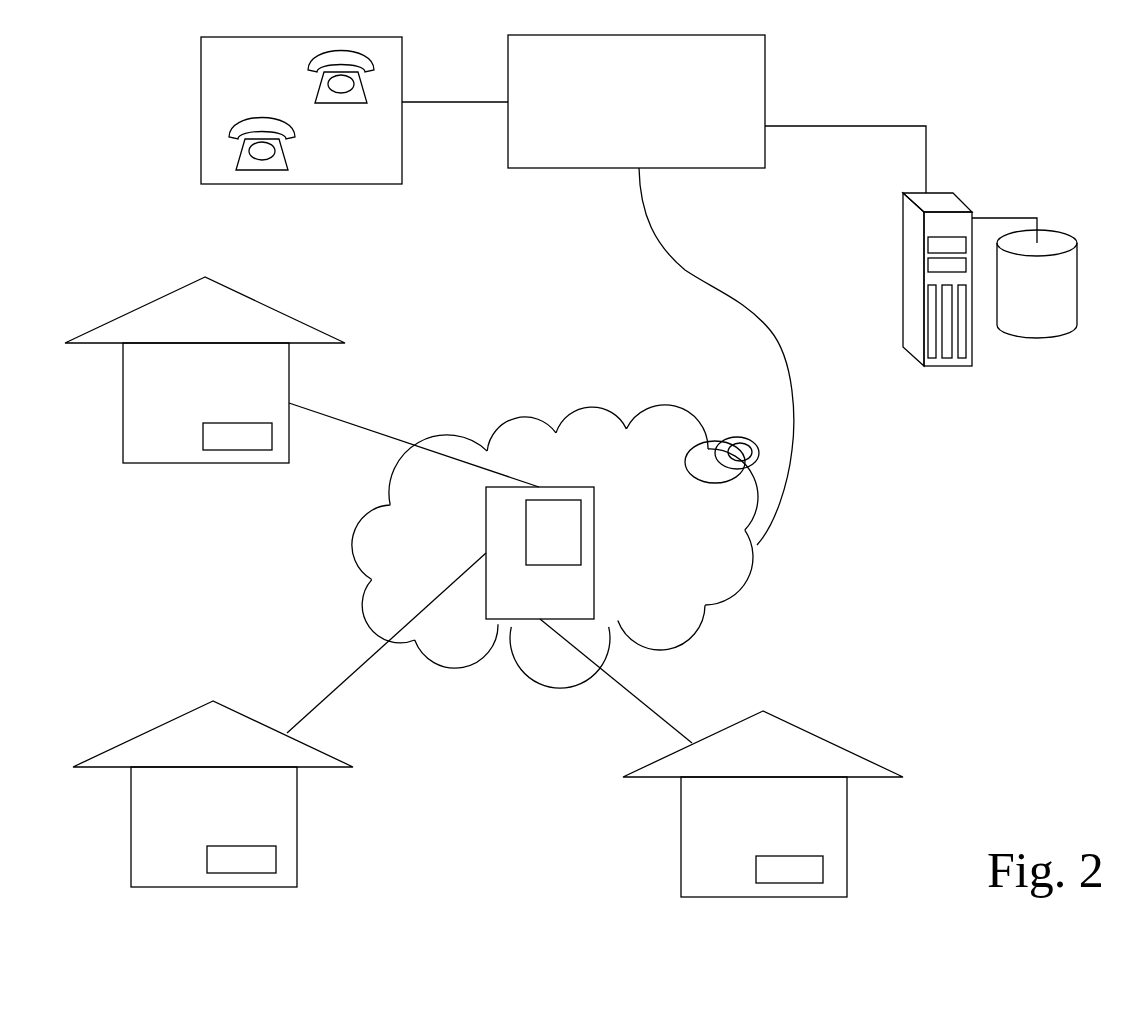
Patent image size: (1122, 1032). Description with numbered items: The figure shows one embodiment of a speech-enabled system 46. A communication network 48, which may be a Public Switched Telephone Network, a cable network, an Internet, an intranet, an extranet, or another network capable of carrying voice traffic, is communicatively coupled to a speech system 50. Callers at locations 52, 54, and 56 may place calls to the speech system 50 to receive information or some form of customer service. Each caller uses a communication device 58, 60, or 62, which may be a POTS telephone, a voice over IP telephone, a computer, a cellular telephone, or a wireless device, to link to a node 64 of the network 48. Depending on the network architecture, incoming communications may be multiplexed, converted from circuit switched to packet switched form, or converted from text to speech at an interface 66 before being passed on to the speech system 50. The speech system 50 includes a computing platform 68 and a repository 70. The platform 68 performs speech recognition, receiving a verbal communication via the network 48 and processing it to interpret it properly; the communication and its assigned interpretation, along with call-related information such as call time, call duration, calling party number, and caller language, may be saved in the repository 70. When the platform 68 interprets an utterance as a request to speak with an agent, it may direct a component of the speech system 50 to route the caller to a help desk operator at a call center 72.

The speech-enabled system 46 is at (1073, 151).
The communication network 48 is at (706, 523).
The speech system 50 is at (610, 98).
The location 52 is at (118, 385).
The location 54 is at (127, 808).
The location 56 is at (677, 818).
The communication device 58 is at (192, 432).
The communication device 60 is at (200, 855).
The communication device 62 is at (750, 865).
The node 64 is at (560, 604).
The interface 66 is at (570, 551).
The computing platform 68 is at (902, 225).
The repository 70 is at (1053, 313).
The call center 72 is at (200, 130).